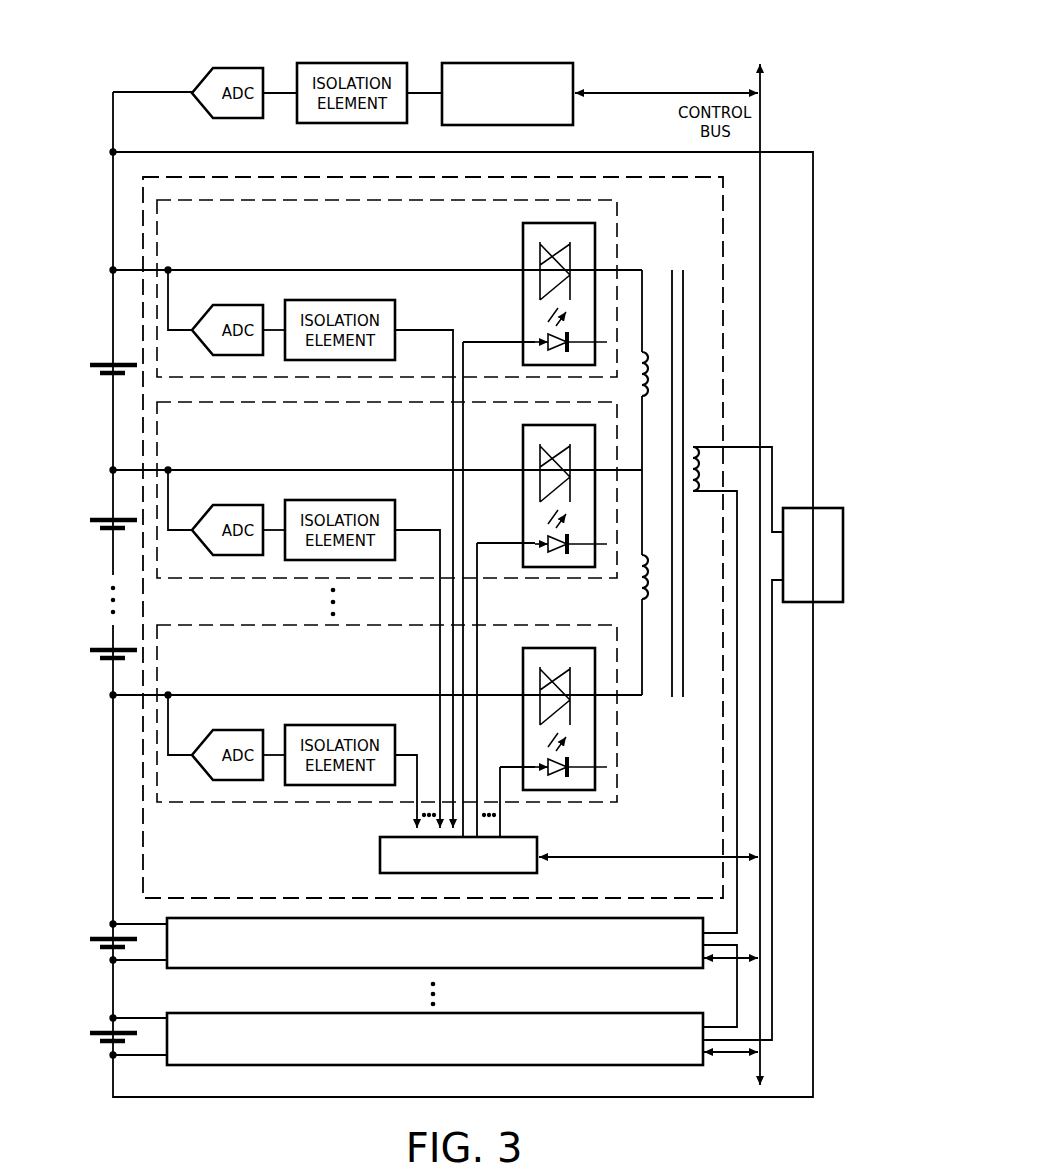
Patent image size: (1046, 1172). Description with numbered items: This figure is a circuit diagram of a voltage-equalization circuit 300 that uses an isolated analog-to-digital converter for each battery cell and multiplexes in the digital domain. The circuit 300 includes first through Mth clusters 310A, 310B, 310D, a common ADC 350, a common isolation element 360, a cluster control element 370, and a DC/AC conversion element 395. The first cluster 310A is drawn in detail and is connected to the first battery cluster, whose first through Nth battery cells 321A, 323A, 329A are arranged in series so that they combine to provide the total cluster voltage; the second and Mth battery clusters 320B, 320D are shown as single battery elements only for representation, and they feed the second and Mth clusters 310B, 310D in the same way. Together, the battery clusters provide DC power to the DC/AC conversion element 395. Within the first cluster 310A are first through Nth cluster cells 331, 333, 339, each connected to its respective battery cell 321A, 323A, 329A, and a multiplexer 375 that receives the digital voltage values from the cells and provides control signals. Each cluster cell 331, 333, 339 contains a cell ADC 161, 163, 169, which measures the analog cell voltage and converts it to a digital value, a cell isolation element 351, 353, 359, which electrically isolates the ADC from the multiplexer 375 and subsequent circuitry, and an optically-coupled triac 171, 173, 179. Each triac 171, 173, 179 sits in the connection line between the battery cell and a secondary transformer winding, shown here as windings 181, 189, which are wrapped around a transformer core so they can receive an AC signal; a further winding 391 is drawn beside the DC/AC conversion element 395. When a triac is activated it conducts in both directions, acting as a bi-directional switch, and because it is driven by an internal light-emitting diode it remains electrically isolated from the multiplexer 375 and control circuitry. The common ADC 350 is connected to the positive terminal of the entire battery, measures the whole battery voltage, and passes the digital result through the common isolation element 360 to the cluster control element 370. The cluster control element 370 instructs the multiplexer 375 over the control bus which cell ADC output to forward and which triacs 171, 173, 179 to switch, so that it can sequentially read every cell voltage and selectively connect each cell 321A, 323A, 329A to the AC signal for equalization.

The voltage-equalization circuit 300 is at (695, 30).
The first cluster 310A is at (184, 176).
The second cluster 310B is at (248, 968).
The Mth cluster 310D is at (600, 1013).
The second battery cluster 320B is at (95, 934).
The Mth battery cluster 320D is at (95, 1029).
The first battery cell 321A is at (103, 364).
The second battery cell 323A is at (103, 519).
The Nth battery cell 329A is at (103, 649).
The first cluster cell 331 is at (617, 212).
The second cluster cell 333 is at (512, 580).
The Nth cluster cell 339 is at (563, 804).
The common ADC 350 is at (243, 69).
The common isolation element 360 is at (377, 62).
The cluster control element 370 is at (538, 48).
The cell ADC 161 is at (209, 312).
The cell ADC 163 is at (209, 512).
The cell ADC 169 is at (209, 737).
The cell isolation element 351 is at (412, 310).
The cell isolation element 353 is at (412, 512).
The cell isolation element 359 is at (412, 737).
The triac 171 is at (523, 246).
The triac 173 is at (523, 448).
The triac 179 is at (523, 672).
The first transformer winding 181 is at (642, 380).
The second transformer winding 189 is at (642, 592).
The transformer output winding 391 is at (708, 494).
The DC/AC conversion element 395 is at (800, 603).
The multiplexer 375 is at (380, 858).